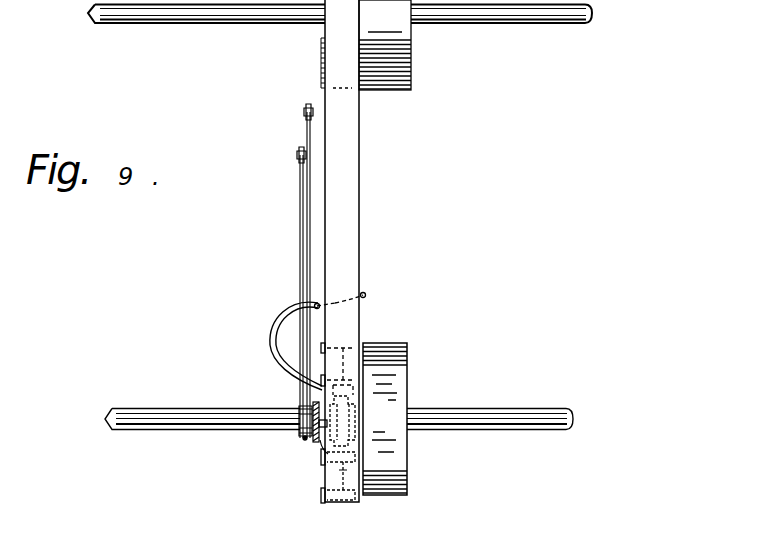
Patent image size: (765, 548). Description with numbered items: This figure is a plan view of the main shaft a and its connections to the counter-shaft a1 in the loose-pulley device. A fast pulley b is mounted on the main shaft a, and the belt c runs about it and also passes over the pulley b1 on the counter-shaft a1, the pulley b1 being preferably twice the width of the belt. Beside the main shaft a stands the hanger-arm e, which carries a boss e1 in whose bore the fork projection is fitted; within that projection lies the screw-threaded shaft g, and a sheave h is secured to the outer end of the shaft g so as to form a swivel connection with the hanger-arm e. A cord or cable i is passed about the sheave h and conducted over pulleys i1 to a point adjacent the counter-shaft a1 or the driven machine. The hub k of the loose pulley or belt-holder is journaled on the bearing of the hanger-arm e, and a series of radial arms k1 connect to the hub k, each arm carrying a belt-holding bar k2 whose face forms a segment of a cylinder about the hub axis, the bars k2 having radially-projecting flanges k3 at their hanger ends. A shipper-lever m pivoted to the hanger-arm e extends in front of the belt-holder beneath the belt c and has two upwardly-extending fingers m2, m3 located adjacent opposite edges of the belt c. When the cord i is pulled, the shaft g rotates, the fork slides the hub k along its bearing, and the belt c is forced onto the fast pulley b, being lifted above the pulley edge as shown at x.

The main shaft a is at (482, 406).
The counter-shaft a1 is at (515, 17).
The fast pulley b is at (408, 373).
The pulley on counter-shaft b1 is at (412, 78).
The belt c is at (363, 238).
The cord or cable i is at (299, 237).
The pulleys i1 is at (296, 155).
The shipper-lever m is at (277, 332).
The finger m2 is at (313, 305).
The finger m3 is at (366, 293).
The shaft g is at (300, 418).
The sheave h is at (308, 442).
The hub k is at (348, 428).
The radial arms k1 is at (328, 489).
The belt-holding bars k2 is at (341, 503).
The radially-projecting flanges k3 is at (327, 503).
The hanger-arm e is at (320, 444).
The boss e1 is at (326, 456).
The lifted belt position x is at (369, 535).